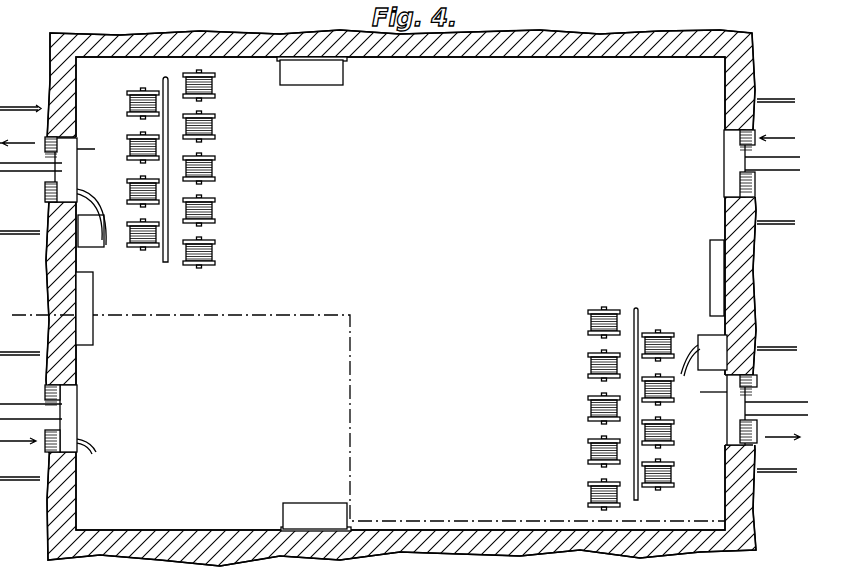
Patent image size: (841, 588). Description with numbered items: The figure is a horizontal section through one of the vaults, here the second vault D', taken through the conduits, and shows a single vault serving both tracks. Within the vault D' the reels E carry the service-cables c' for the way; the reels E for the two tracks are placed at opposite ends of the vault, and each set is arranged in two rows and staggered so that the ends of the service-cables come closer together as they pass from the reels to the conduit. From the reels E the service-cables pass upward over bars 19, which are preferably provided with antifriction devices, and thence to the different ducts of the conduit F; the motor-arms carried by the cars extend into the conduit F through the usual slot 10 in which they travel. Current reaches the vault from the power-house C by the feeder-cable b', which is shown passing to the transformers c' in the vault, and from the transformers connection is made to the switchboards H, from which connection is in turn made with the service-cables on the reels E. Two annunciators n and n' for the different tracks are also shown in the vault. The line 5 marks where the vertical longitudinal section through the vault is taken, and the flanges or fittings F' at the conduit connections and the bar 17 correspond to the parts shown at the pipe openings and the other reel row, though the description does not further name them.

The reel E is at (137, 160).
The supporting bar 17 is at (165, 255).
The bar 19 is at (636, 323).
The annunciator n is at (312, 71).
The annunciator n' is at (316, 517).
The service-cable c' is at (402, 292).
The feeder-cable b' is at (378, 318).
The power-house C is at (392, 273).
The conduit F is at (400, 291).
The flange F' is at (402, 291).
The switchboard H is at (717, 262).
The slot 10 is at (404, 291).
The section line 5 is at (785, 517).
The second vault D' is at (400, 293).